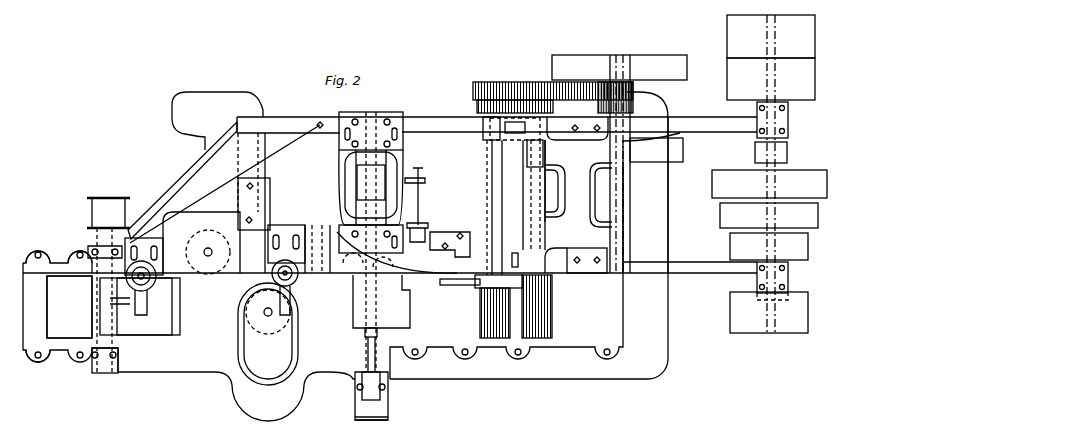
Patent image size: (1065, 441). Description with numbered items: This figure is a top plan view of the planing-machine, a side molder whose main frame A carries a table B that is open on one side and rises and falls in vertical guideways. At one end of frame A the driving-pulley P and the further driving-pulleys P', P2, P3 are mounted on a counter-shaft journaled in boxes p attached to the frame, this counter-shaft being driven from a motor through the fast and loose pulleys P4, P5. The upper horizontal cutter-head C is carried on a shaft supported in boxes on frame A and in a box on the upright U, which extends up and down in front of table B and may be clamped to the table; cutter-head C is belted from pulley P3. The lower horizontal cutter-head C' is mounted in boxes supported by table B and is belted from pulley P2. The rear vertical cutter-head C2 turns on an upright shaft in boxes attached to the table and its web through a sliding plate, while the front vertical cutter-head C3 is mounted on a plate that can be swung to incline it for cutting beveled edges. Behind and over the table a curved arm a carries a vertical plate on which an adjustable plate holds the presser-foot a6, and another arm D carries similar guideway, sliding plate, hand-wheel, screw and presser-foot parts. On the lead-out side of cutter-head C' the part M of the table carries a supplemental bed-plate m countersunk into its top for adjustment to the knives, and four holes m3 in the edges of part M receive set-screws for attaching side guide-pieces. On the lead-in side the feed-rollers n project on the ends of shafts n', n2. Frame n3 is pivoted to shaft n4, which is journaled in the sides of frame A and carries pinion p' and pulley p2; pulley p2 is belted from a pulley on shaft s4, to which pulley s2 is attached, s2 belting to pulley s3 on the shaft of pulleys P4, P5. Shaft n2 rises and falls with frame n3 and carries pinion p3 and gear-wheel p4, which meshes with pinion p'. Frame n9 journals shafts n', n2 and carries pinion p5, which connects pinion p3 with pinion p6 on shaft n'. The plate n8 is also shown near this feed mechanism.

The main frame A is at (464, 182).
The curved arm a is at (225, 182).
The presser-foot a6 is at (136, 279).
The table B is at (345, 256).
The upper horizontal cutter-head C is at (371, 319).
The lower horizontal cutter-head C' is at (382, 396).
The rear vertical cutter-head C2 is at (310, 242).
The front vertical cutter-head C3 is at (192, 291).
The arm D is at (299, 270).
The part of the table M is at (62, 358).
The supplemental bed-plate m is at (69, 307).
The holes m3 is at (82, 365).
The feed-rollers n is at (537, 312).
The feed-roller shaft n' is at (481, 244).
The feed-roller shaft n2 is at (555, 191).
The frame n3 is at (564, 191).
The shaft n4 is at (614, 193).
The plate n8 is at (552, 260).
The frame n9 is at (526, 195).
The boxes p is at (784, 174).
The pinion p' is at (641, 164).
The pulley p2 is at (619, 67).
The pinion p3 is at (550, 148).
The gear-wheel p4 is at (522, 86).
The pinion p5 is at (483, 124).
The pinion p6 is at (477, 106).
The driving-pulley P is at (769, 312).
The driving-pulley P' is at (769, 246).
The driving-pulley P2 is at (769, 215).
The driving-pulley P3 is at (769, 184).
The pulley P4 is at (771, 79).
The pulley P5 is at (771, 36).
The pulley s2 is at (683, 150).
The pulley s3 is at (755, 153).
The shaft s4 is at (635, 222).
The upright U is at (355, 410).